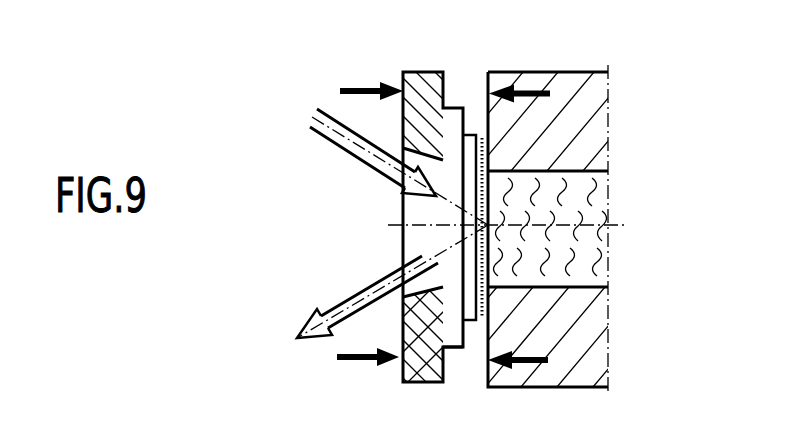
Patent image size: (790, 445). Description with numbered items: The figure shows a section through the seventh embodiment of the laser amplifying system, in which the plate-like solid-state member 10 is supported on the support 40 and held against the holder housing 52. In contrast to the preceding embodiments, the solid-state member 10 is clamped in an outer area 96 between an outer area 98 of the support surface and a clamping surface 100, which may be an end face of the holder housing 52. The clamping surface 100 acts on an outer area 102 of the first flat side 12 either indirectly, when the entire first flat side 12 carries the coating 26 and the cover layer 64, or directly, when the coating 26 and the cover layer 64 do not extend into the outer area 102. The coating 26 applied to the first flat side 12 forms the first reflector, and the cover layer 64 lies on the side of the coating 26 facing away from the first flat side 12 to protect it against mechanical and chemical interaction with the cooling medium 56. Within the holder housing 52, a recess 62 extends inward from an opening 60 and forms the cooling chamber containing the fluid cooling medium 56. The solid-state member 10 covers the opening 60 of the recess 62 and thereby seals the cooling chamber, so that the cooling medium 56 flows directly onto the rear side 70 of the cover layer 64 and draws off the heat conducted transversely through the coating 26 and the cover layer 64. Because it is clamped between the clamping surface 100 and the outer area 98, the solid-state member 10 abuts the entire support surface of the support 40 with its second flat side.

The solid-state member 10 is at (440, 150).
The first flat side 12 is at (492, 166).
The coating 26 is at (492, 228).
The support 40 is at (399, 378).
The holder housing 52 is at (577, 85).
The cooling medium 56 is at (563, 261).
The opening 60 is at (490, 285).
The recess 62 is at (585, 287).
The cover layer 64 is at (492, 193).
The rear side 70 is at (492, 205).
The outer area 96 is at (469, 133).
The outer area of the support surface 98 is at (467, 331).
The clamping surface 100 is at (487, 366).
The outer area of the first flat side 102 is at (492, 140).